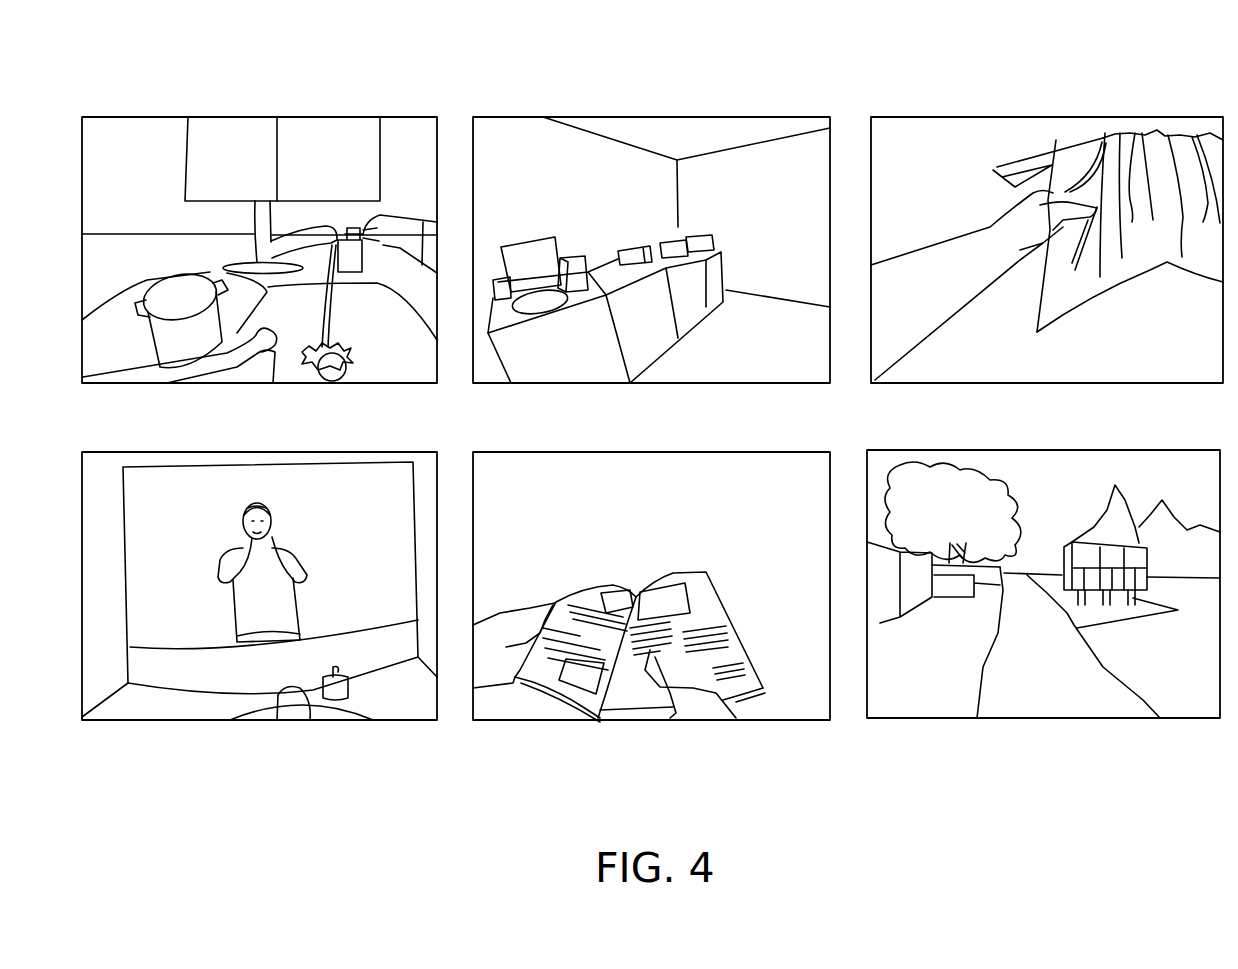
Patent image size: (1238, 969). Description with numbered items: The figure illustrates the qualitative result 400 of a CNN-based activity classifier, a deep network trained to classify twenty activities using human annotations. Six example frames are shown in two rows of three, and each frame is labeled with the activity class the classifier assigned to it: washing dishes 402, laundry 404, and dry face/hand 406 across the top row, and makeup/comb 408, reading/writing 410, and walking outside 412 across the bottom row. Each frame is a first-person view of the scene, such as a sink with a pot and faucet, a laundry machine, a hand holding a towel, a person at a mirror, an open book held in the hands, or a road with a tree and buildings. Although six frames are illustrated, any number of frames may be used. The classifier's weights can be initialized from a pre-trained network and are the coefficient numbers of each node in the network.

The qualitative result 400 is at (673, 826).
The washing dishes 402 is at (258, 57).
The laundry 404 is at (641, 60).
The dry face/hand 406 is at (1051, 58).
The makeup/comb 408 is at (224, 732).
The reading/writing 410 is at (546, 735).
The walking outside 412 is at (933, 729).